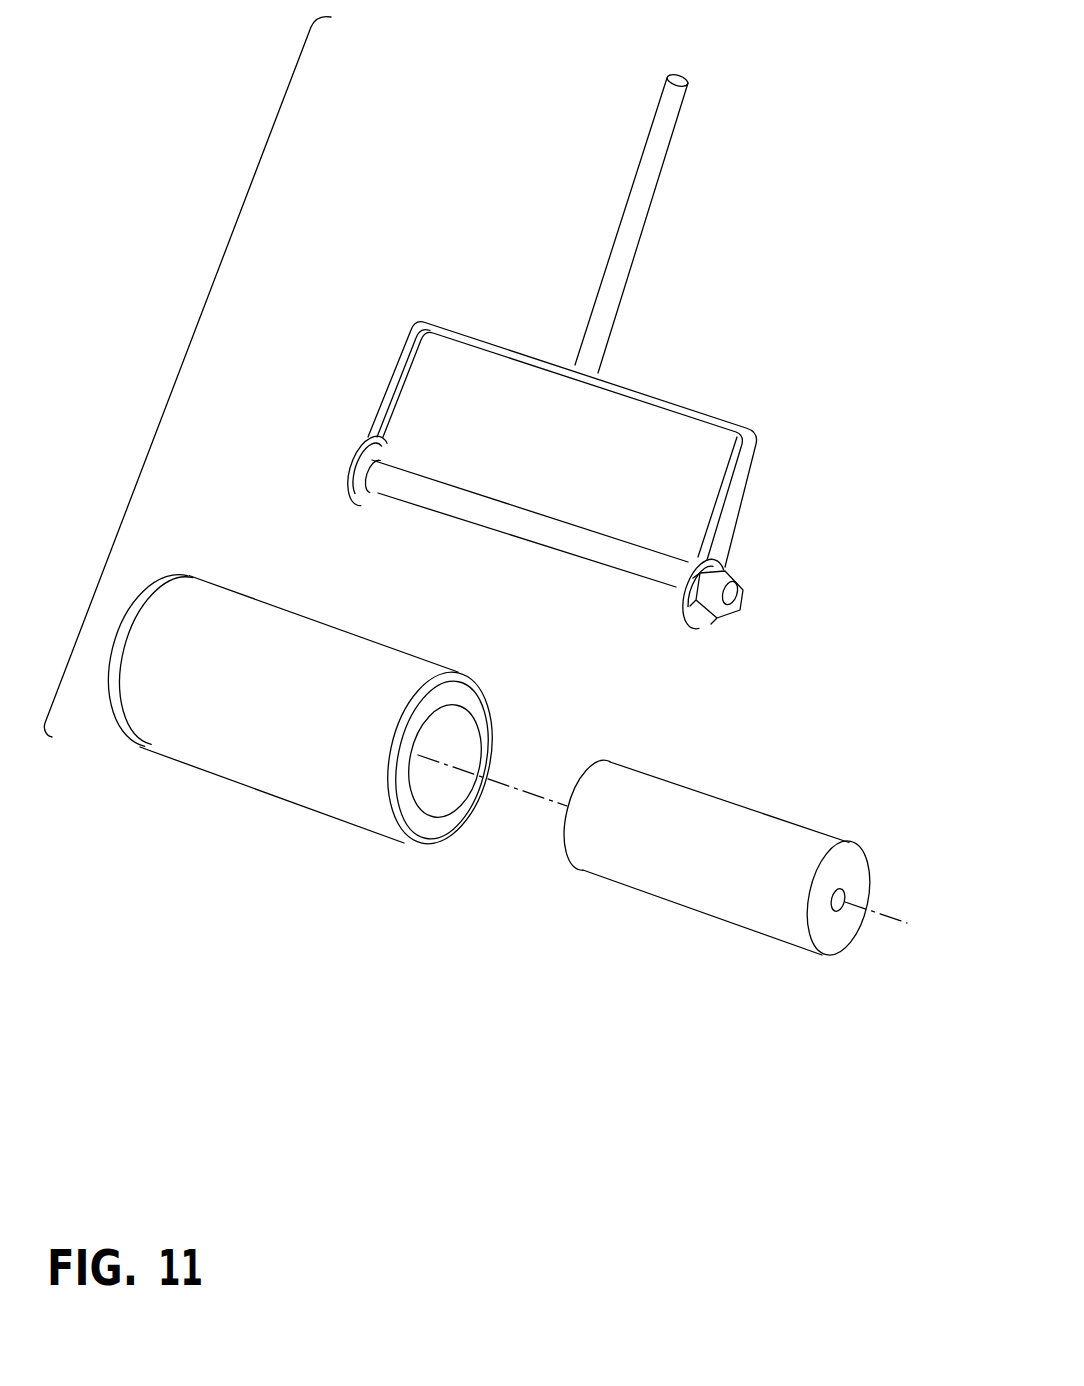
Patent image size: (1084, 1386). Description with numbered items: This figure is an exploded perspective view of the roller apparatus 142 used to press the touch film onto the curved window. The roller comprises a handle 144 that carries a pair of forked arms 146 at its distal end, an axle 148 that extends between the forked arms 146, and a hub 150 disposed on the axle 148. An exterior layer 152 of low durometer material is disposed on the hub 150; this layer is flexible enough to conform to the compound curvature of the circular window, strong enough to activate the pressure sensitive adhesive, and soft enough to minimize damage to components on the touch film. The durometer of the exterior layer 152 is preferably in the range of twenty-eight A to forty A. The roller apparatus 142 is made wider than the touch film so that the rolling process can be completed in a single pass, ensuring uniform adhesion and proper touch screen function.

The roller apparatus 142 is at (188, 341).
The handle 144 is at (637, 212).
The forked arms 146 is at (735, 505).
The axle 148 is at (573, 543).
The hub 150 is at (868, 873).
The exterior layer 152 is at (302, 808).